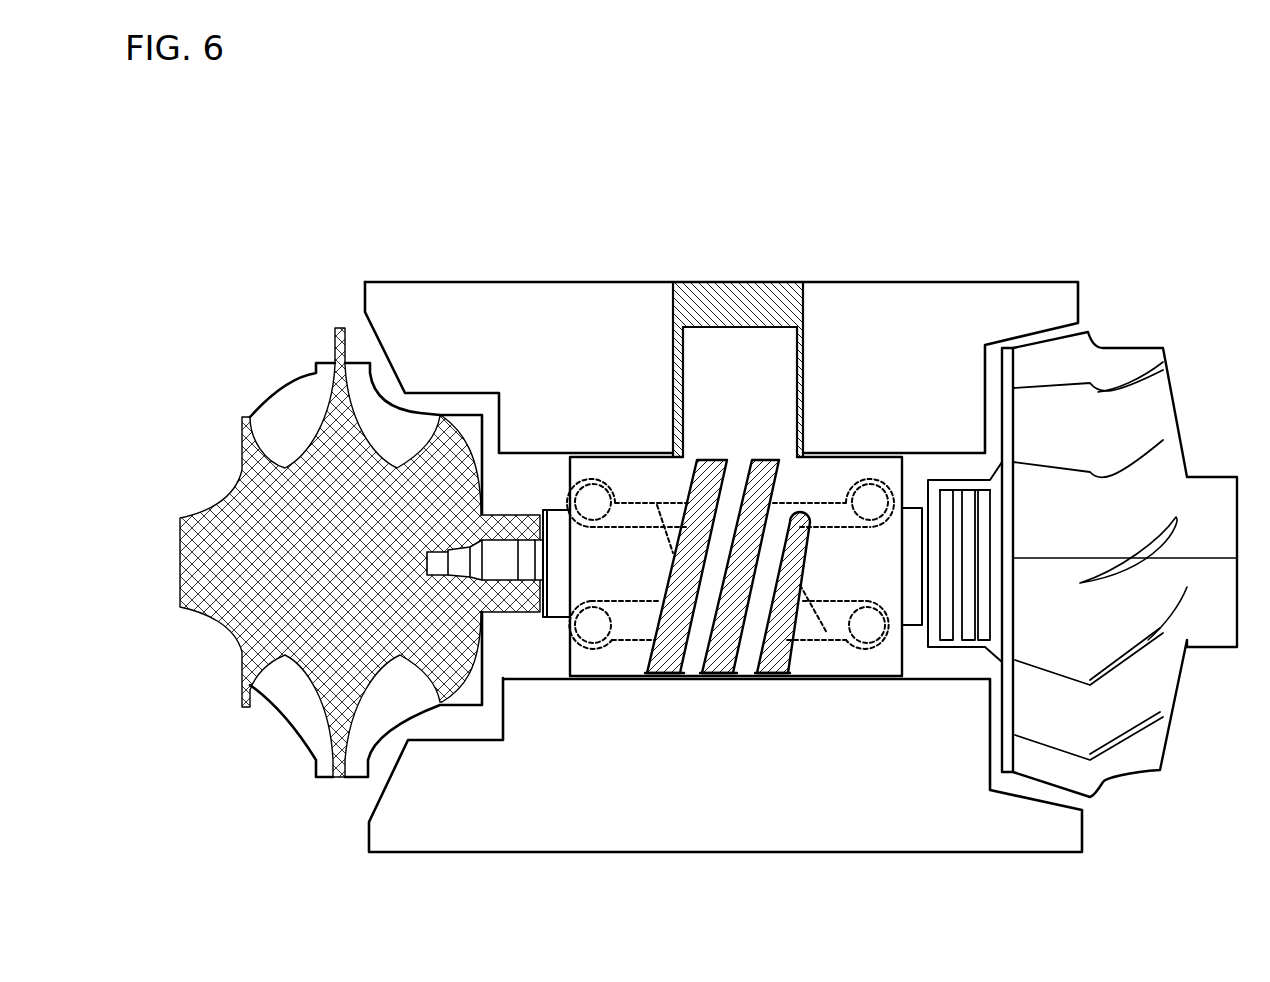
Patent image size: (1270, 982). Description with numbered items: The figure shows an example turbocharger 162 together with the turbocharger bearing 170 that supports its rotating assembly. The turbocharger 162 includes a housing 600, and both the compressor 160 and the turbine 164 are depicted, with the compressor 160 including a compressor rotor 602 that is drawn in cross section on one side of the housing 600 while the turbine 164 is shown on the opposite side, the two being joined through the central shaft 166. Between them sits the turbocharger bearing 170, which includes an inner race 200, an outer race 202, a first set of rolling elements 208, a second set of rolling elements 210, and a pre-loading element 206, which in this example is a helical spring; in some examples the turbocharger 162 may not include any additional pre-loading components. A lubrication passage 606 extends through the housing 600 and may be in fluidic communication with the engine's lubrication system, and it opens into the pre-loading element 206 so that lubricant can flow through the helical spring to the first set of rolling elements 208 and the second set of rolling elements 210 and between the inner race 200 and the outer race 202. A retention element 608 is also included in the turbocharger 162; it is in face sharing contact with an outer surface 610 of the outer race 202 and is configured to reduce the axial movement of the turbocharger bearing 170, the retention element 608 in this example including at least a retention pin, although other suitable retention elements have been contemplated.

The compressor 160 is at (328, 303).
The turbocharger 162 is at (704, 184).
The turbine 164 is at (1127, 307).
The shaft 166 is at (548, 512).
The turbocharger bearing 170 is at (736, 598).
The inner race 200 is at (630, 579).
The outer race 202 is at (622, 462).
The pre-loading element 206 is at (790, 680).
The first set of rolling elements 208 is at (558, 508).
The second set of rolling elements 210 is at (868, 512).
The housing 600 is at (442, 302).
The compressor rotor 602 is at (252, 472).
The lubrication passage 606 is at (752, 316).
The retention element 608 is at (752, 402).
The outer surface 610 is at (690, 462).